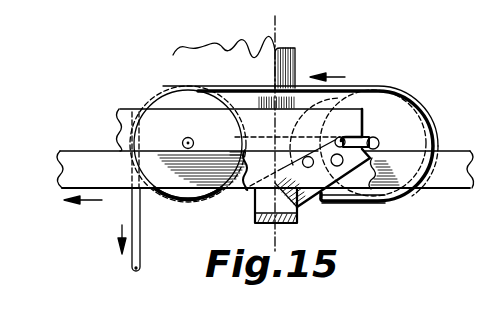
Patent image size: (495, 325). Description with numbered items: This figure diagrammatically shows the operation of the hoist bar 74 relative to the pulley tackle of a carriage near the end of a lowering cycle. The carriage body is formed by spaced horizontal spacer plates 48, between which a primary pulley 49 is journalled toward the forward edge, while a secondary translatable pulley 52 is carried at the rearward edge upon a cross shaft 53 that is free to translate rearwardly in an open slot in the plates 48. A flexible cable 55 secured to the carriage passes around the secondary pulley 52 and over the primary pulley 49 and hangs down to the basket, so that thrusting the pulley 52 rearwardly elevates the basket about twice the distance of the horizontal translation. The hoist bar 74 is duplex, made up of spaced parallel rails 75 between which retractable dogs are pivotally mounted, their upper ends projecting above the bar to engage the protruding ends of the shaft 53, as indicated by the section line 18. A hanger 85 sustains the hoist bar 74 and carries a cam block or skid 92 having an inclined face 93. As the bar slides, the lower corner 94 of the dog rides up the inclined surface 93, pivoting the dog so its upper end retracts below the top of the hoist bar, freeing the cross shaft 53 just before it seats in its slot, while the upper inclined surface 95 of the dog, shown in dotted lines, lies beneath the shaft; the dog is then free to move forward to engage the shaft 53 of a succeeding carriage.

The section line 18 is at (255, 33).
The spacer plates 48 is at (135, 108).
The primary pulley 49 is at (170, 89).
The secondary translatable pulley 52 is at (378, 88).
The cross shaft 53 is at (380, 139).
The flexible cable 55 is at (139, 238).
The hoist bar 74 is at (60, 188).
The rails 75 is at (90, 151).
The hanger 85 is at (203, 88).
The cam block 92 is at (255, 190).
The inclined face 93 is at (258, 223).
The lower corner of the dog 94 is at (315, 206).
The upper inclined surface of the dog 95 is at (297, 136).